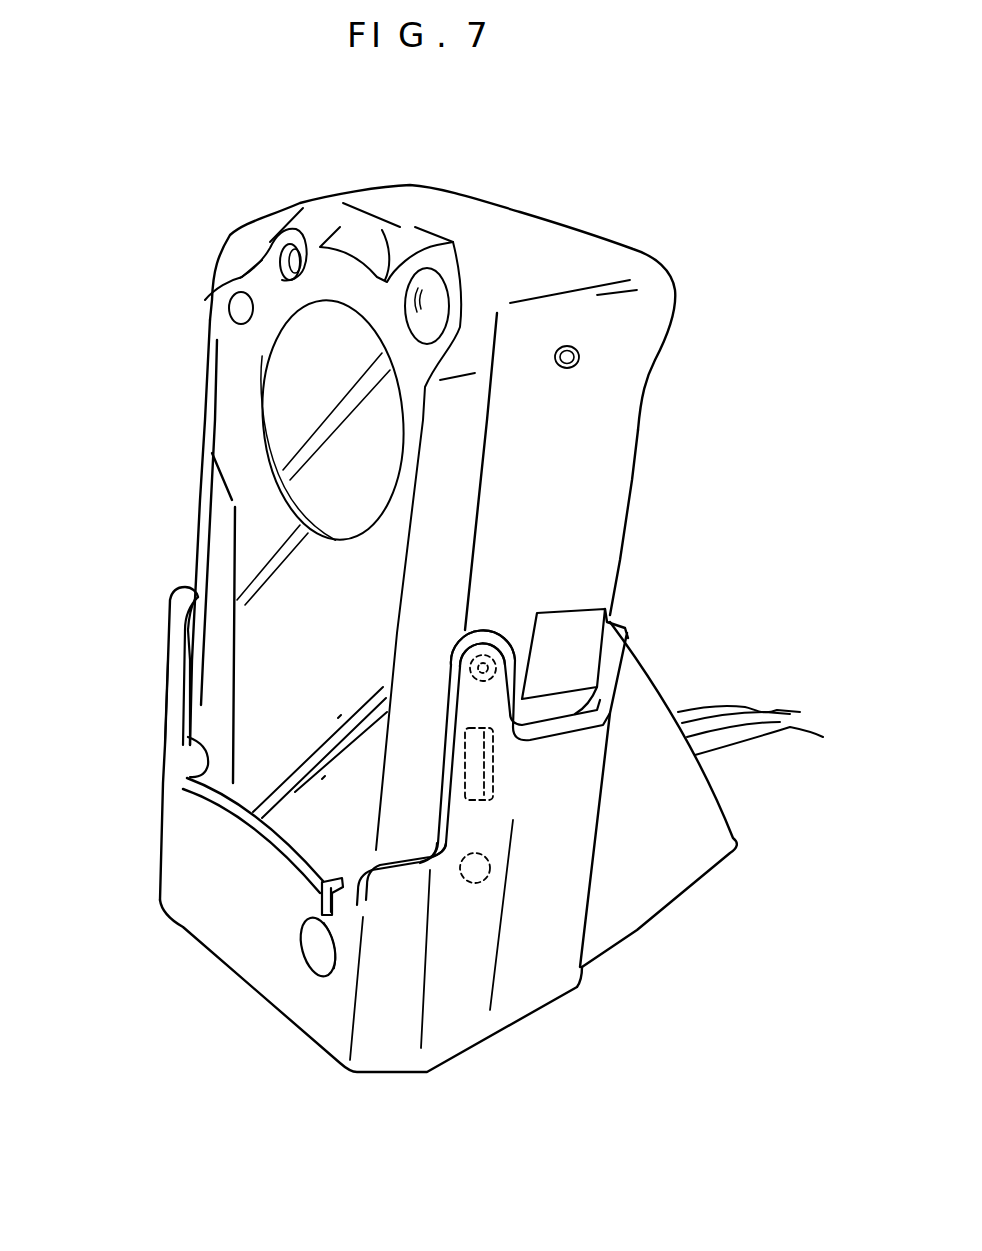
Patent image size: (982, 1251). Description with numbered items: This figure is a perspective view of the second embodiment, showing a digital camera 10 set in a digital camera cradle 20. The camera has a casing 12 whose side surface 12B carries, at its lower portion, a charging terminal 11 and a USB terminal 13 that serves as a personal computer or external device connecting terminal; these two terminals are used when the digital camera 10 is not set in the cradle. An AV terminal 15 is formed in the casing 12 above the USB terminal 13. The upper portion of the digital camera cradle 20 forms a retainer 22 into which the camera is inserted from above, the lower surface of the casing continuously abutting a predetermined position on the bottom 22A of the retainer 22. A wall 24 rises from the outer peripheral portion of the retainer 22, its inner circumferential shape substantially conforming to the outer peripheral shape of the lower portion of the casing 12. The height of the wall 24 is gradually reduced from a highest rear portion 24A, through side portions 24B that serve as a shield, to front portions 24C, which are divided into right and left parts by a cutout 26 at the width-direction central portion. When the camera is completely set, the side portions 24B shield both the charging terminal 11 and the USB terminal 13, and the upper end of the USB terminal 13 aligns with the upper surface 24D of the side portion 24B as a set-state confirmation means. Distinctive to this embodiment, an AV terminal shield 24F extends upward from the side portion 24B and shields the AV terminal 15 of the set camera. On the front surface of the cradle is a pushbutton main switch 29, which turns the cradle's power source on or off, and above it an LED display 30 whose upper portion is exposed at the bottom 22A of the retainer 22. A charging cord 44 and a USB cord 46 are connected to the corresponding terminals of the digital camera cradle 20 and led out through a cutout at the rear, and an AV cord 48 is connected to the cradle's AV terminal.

The digital camera 10 is at (562, 196).
The charging terminal 11 is at (475, 883).
The casing 12 is at (613, 243).
The side surface 12B is at (620, 547).
The USB terminal 13 is at (493, 783).
The AV terminal 15 is at (468, 663).
The digital camera cradle 20 is at (158, 757).
The retainer 22 is at (304, 831).
The bottom 22A is at (273, 838).
The wall 24 is at (586, 790).
The highest rear portion 24A is at (622, 633).
The side portions 24B is at (185, 588).
The front portions 24C is at (166, 718).
The upper surface 24D is at (597, 683).
The AV terminal shield 24F is at (483, 640).
The cutout 26 is at (187, 779).
The main switch 29 is at (317, 967).
The display 30 is at (357, 917).
The charging cord 44 is at (763, 713).
The USB cord 46 is at (718, 705).
The AV cord 48 is at (773, 730).